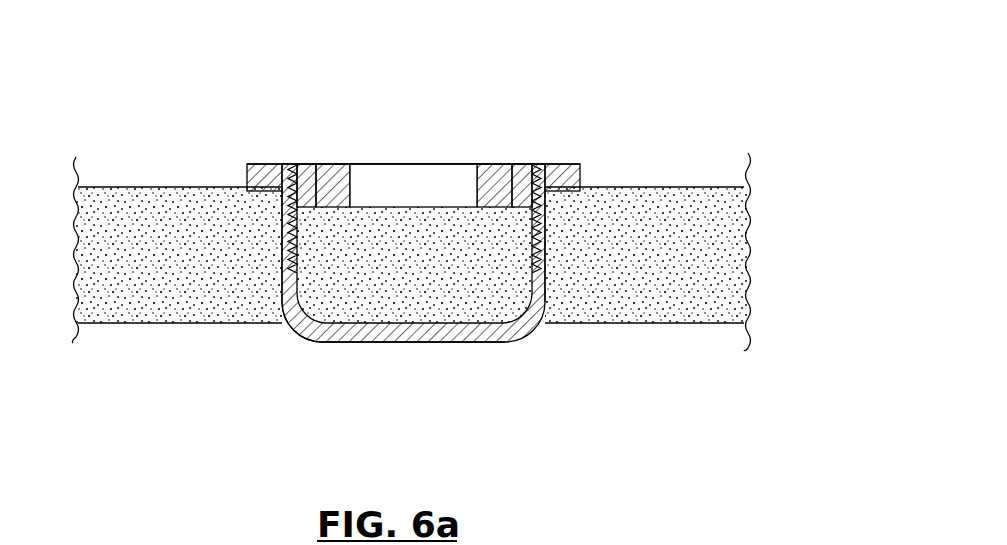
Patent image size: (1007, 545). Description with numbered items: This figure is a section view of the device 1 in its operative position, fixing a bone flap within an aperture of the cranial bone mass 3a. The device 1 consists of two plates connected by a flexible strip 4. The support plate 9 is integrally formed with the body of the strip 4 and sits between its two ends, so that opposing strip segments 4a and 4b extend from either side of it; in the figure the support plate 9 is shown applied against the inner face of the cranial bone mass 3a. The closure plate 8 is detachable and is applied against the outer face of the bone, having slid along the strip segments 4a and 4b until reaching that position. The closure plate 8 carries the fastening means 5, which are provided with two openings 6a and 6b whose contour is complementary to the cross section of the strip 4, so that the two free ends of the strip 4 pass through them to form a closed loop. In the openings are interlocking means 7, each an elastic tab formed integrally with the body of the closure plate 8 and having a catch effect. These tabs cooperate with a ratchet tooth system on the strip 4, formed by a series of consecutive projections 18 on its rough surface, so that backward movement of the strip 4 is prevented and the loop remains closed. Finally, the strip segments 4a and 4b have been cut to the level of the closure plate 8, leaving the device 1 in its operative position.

The device 1 is at (230, 85).
The cranial bone mass 3a is at (148, 268).
The strip 4 is at (543, 253).
The strip segment 4a is at (281, 237).
The strip segment 4b is at (540, 228).
The fastening means 5 is at (317, 163).
The opening 6a is at (310, 167).
The opening 6b is at (517, 165).
The interlocking means 7 is at (277, 167).
The closure plate 8 is at (483, 165).
The support plate 9 is at (403, 333).
The projections 18 is at (280, 287).